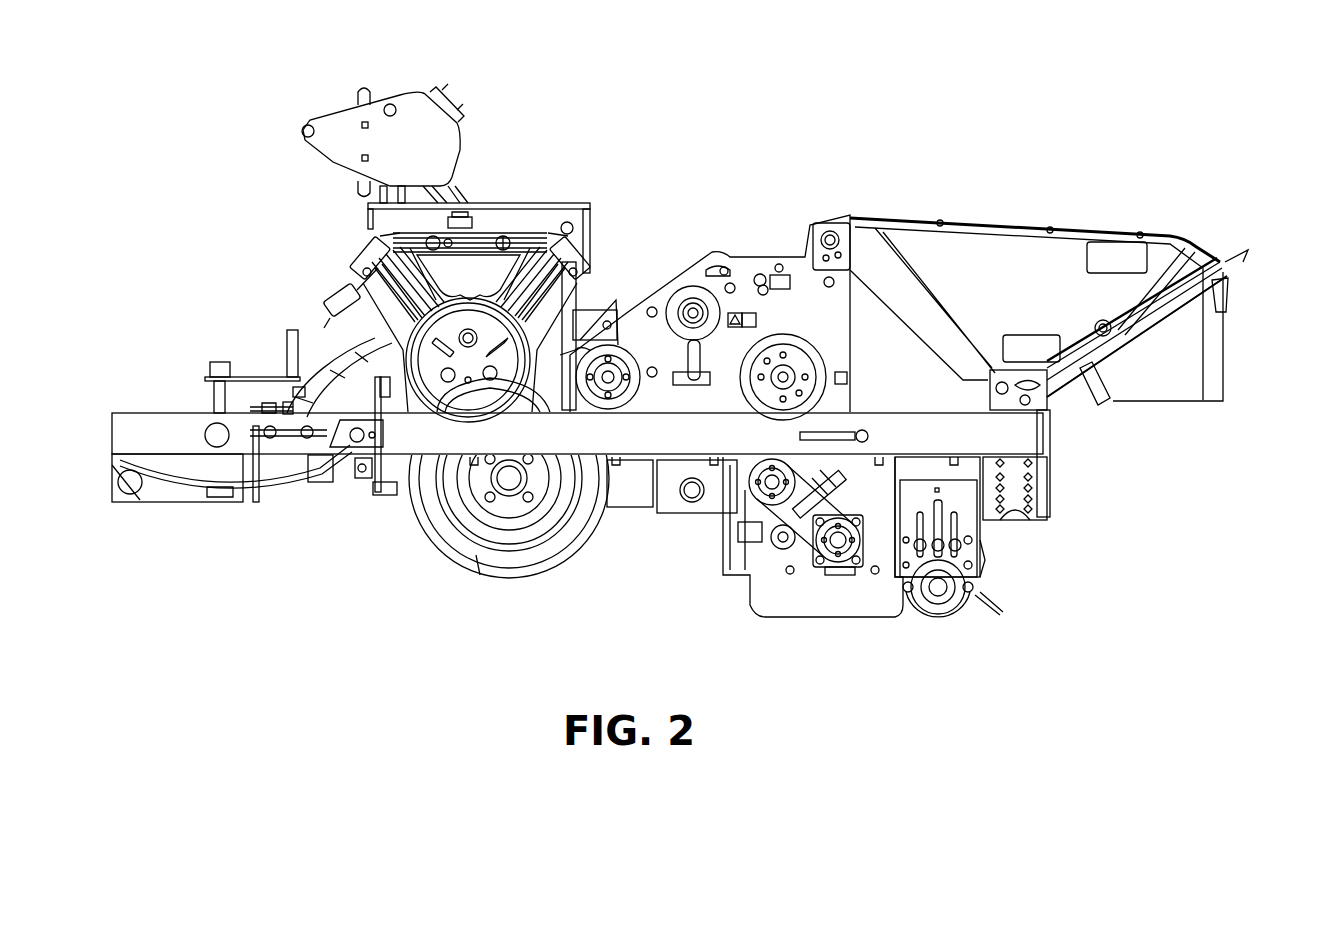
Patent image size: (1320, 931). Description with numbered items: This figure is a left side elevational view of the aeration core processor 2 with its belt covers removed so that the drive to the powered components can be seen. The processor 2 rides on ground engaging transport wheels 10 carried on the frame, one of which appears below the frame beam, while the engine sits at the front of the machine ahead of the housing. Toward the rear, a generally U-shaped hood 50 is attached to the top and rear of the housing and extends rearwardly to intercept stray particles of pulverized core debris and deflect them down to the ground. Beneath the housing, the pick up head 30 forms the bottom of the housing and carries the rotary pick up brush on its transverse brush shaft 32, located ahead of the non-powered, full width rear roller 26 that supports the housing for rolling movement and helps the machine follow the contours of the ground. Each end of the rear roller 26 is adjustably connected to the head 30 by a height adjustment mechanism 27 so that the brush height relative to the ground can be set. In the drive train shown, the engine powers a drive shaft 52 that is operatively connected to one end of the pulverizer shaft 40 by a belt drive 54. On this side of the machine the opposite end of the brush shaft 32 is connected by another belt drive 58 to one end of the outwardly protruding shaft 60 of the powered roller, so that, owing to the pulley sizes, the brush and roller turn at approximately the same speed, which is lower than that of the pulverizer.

The aeration core processor 2 is at (754, 122).
The ground engaging transport wheel 10 is at (527, 562).
The rear roller 26 is at (947, 617).
The height adjustment mechanism 27 is at (970, 515).
The pick up head 30 is at (731, 578).
The brush shaft 32 is at (843, 557).
The pulverizer shaft 40 is at (785, 376).
The hood 50 is at (1005, 267).
The drive shaft 52 is at (611, 383).
The belt drive 54 is at (748, 332).
The belt drive 58 is at (833, 503).
The shaft of roller 60 is at (765, 485).